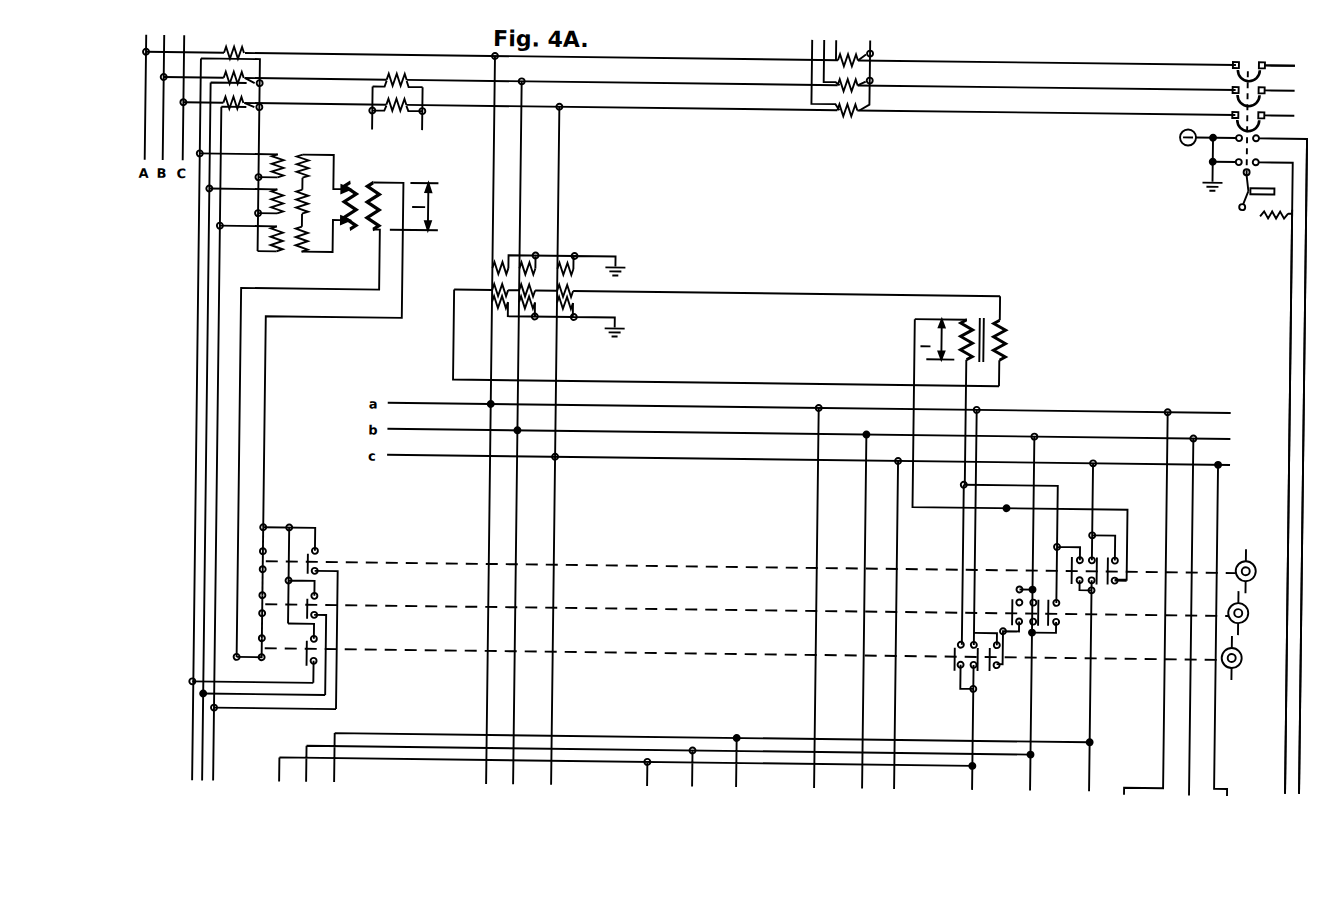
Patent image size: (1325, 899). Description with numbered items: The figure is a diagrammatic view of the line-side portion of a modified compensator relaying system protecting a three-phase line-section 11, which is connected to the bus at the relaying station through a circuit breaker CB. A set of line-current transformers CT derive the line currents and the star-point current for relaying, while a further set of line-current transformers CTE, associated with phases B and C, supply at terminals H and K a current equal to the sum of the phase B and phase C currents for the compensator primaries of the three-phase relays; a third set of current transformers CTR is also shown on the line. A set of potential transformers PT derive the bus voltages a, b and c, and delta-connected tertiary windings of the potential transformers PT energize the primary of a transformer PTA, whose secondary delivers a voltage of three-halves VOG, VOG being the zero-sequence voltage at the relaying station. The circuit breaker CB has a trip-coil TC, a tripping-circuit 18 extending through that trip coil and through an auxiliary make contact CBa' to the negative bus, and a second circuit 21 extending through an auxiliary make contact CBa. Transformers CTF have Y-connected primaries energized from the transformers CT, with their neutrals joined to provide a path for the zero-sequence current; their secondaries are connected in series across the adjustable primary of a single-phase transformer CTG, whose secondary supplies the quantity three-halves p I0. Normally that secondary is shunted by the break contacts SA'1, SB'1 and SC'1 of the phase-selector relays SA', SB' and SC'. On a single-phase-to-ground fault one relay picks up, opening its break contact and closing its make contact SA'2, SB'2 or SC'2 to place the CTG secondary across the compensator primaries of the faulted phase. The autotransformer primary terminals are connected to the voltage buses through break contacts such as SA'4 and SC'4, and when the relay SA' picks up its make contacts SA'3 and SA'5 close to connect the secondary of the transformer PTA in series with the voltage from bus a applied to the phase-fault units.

The line-current transformers CT is at (230, 407).
The line-current transformers CTE is at (384, 104).
The current transformer CTR is at (858, 78).
The transformers CTF is at (273, 191).
The single-phase transformer CTG is at (344, 420).
The potential transformers PT is at (727, 313).
The transformer PTA is at (974, 390).
The circuit breaker CB is at (1270, 112).
The three-phase line-section 11 is at (1273, 57).
The auxiliary make contact CBa is at (1239, 461).
The auxiliary circuit-breaker make-contact CBa' is at (1249, 474).
The trip-coil TC is at (1266, 200).
The tripping-circuit 18 is at (1294, 231).
The circuit 21 is at (1308, 253).
The break contacts SC'1 is at (287, 548).
The break contacts SB'1 is at (280, 619).
The break contacts SA'1 is at (251, 657).
The make contacts SC'2 is at (307, 616).
The make contacts SB'2 is at (336, 611).
The make contacts SA'2 is at (337, 654).
The make contacts SA'3 is at (943, 588).
The break contacts SA'4 is at (996, 680).
The make contacts SA'5 is at (1002, 666).
The break contacts SC'4 is at (1046, 547).
The phase-selector relay SC' is at (1253, 571).
The phase-selector relay SB' is at (1247, 614).
The phase-selector relay SA' is at (1240, 659).